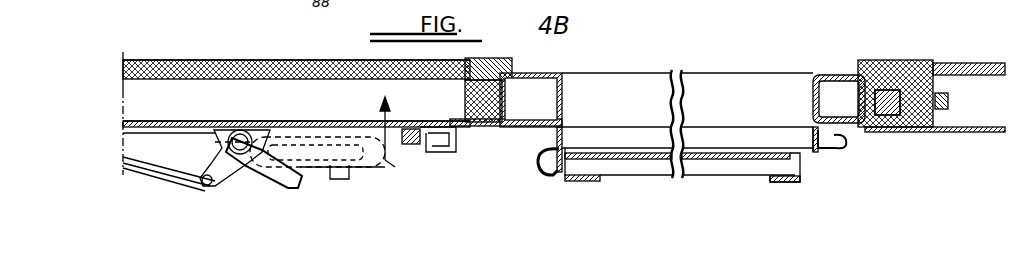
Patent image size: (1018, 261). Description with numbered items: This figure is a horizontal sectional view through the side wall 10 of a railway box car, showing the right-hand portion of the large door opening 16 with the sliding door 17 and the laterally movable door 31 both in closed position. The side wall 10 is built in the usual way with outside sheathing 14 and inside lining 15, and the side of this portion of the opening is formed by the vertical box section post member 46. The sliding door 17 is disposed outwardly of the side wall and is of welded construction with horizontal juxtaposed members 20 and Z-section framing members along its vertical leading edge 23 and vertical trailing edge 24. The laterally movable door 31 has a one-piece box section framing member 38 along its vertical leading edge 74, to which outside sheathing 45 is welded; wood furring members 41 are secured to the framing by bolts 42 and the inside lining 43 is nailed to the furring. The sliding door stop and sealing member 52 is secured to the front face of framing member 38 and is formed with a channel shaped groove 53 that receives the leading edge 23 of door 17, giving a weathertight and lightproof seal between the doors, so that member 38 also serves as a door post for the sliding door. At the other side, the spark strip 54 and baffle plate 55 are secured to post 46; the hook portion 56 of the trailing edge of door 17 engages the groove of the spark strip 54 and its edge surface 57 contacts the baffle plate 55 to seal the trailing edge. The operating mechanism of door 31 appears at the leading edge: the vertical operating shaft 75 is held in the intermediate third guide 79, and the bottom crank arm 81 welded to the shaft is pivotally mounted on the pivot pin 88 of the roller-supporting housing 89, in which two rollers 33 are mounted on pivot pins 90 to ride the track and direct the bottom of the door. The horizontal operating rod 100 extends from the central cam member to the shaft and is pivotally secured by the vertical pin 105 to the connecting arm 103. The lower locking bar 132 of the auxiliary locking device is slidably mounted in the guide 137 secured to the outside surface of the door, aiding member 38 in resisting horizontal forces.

The side wall 10 is at (892, 59).
The outside sheathing 14 is at (962, 133).
The inside lining 15 is at (920, 63).
The door opening 16 is at (262, 60).
The sliding door 17 is at (750, 165).
The horizontal juxtaposed members 20 is at (658, 177).
The vertical leading edge framing member 23 is at (588, 183).
The vertical trailing edge framing member 24 is at (798, 185).
The laterally movable door 31 is at (386, 145).
The rollers 33 is at (388, 165).
The vertical leading edge framing member 38 is at (540, 80).
The wood furring members 41 is at (465, 100).
The bolts 42 is at (465, 87).
The inside lining 43 is at (325, 60).
The outside sheathing 45 is at (123, 130).
The vertical box section post member 46 is at (840, 76).
The sliding door stop and sealing member 52 is at (496, 127).
The channel shaped groove 53 is at (552, 178).
The spark strip 54 is at (812, 133).
The baffle plate 55 is at (840, 138).
The hook portion 56 is at (846, 150).
The edge surface 57 is at (812, 132).
The vertical leading edge 74 is at (566, 112).
The vertical operating shaft 75 is at (246, 128).
The third guide 79 is at (213, 132).
The bottom crank arm 81 is at (280, 184).
The pivot pin 88 is at (302, 180).
The roller-supporting housing 89 is at (342, 182).
The pivot pins 90 is at (362, 170).
The horizontal operating rod 100 is at (186, 184).
The connecting arm 103 is at (236, 180).
The vertical pin 105 is at (204, 186).
The lower locking bar 132 is at (416, 146).
The guide 137 is at (456, 151).